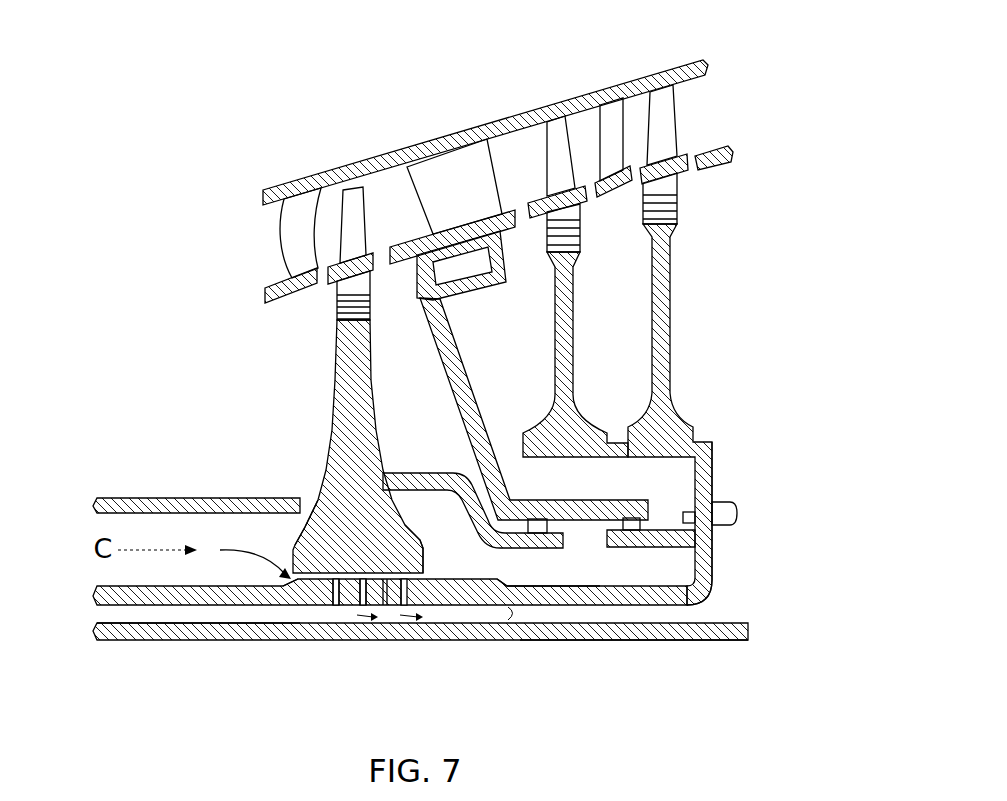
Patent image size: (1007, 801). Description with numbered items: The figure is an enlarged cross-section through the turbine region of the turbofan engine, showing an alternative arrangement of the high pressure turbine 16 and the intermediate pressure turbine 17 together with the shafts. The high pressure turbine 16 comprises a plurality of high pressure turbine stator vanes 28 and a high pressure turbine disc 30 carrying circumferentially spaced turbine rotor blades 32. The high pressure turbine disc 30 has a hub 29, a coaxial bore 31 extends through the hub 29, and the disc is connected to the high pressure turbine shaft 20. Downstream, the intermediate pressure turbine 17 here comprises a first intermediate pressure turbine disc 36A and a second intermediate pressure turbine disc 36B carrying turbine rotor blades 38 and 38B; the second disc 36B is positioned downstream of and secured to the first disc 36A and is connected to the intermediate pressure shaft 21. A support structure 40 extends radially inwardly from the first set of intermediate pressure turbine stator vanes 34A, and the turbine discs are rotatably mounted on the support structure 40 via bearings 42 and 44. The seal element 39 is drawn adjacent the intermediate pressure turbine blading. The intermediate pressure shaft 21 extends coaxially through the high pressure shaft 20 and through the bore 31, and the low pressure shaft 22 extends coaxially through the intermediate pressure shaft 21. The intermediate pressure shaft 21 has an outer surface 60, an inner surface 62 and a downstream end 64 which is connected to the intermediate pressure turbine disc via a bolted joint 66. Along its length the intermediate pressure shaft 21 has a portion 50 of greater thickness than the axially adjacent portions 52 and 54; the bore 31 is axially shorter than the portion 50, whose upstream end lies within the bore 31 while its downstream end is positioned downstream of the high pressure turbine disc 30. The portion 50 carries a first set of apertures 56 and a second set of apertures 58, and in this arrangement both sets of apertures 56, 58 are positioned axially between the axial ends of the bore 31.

The high pressure turbine 16 is at (310, 174).
The intermediate pressure turbine 17 is at (533, 106).
The high pressure turbine shaft 20 is at (215, 497).
The intermediate pressure shaft 21 is at (222, 608).
The low pressure shaft 22 is at (310, 600).
The high pressure turbine stator vanes 28 is at (293, 228).
The hub 29 is at (380, 530).
The high pressure turbine disc 30 is at (353, 397).
The bore 31 is at (316, 502).
The turbine rotor blades 32 is at (357, 220).
The first set of intermediate pressure turbine stator vanes 34A is at (470, 162).
The first intermediate pressure turbine disc 36A is at (578, 408).
The second intermediate pressure turbine disc 36B is at (677, 420).
The turbine rotor blades 38 is at (557, 153).
The turbine rotor blades 38B is at (663, 125).
The seal segment 39 is at (613, 117).
The support structure 40 is at (457, 363).
The bearing 42 is at (540, 508).
The bearing 44 is at (634, 520).
The portion 50 is at (482, 600).
The axially adjacent portion 52 is at (173, 605).
The axially adjacent portion 54 is at (595, 606).
The first set of apertures 56 is at (343, 600).
The second set of apertures 58 is at (375, 600).
The outer surface 60 is at (277, 600).
The inner surface 62 is at (320, 598).
The downstream end 64 is at (714, 560).
The bolted joint 66 is at (748, 504).